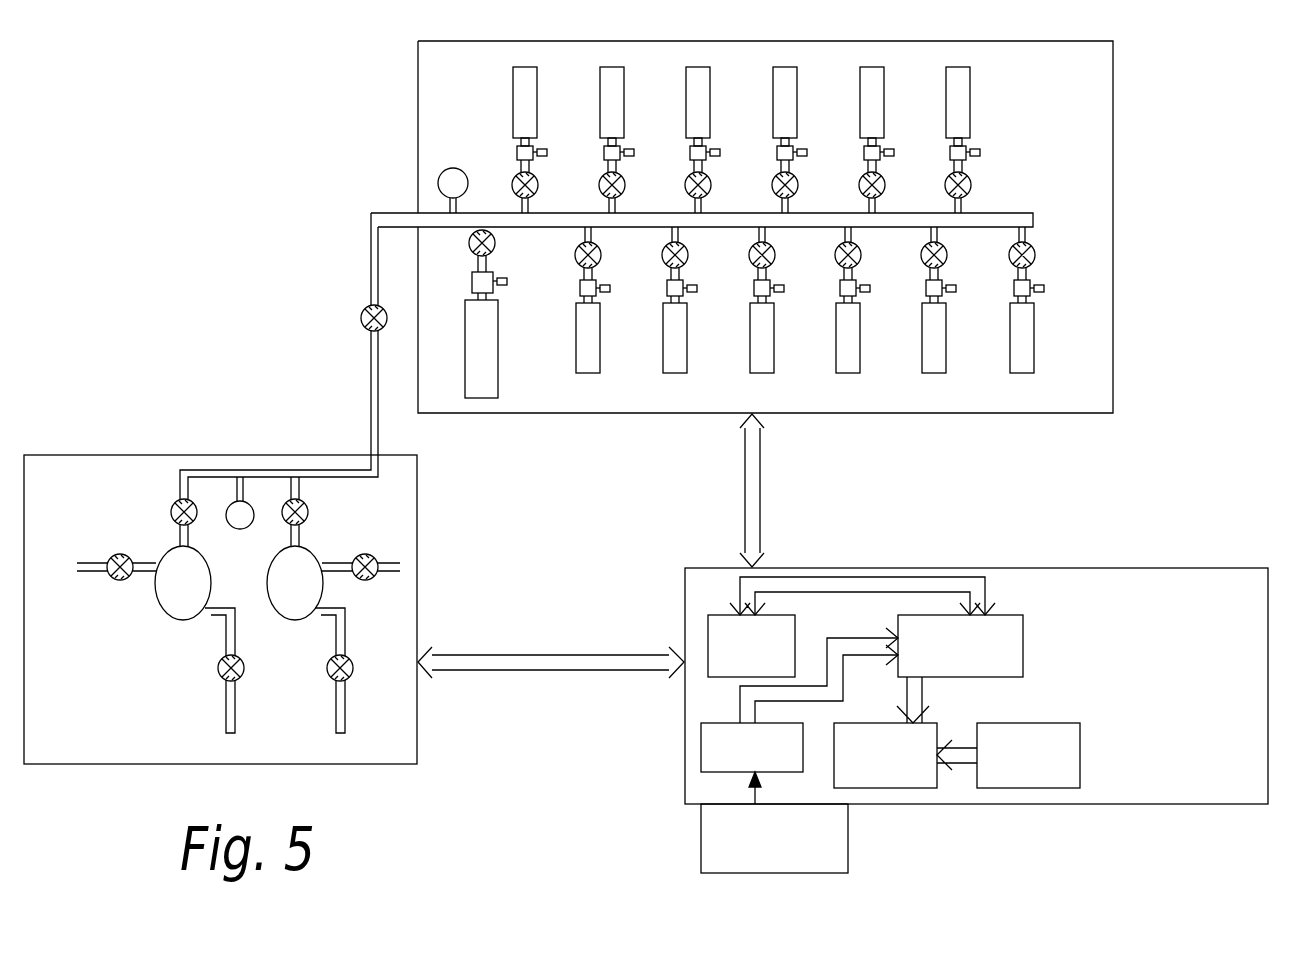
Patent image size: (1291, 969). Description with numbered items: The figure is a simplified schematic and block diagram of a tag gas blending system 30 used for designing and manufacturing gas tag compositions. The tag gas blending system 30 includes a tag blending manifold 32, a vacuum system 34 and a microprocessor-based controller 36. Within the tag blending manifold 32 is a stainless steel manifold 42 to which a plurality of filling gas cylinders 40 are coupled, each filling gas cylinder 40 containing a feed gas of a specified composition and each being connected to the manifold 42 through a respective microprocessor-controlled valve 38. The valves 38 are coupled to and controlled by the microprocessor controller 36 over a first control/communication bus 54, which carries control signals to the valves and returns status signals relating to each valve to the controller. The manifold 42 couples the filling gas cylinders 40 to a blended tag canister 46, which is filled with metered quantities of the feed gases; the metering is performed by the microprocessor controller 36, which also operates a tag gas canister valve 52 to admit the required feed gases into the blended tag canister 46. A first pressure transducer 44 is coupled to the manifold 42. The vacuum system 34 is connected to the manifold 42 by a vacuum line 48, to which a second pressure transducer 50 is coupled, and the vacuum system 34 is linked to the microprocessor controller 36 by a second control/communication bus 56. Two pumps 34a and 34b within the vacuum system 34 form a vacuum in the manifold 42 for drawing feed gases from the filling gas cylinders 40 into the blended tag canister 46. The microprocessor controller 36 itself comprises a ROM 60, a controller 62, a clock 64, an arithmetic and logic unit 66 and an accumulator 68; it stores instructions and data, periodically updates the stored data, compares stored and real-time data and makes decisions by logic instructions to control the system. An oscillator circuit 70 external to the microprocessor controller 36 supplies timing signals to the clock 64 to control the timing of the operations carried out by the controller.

The tag gas blending system 30 is at (248, 206).
The tag blending manifold 32 is at (1069, 88).
The vacuum system 34 is at (74, 528).
The pump 34a is at (177, 563).
The pump 34b is at (300, 563).
The microprocessor controller 36 is at (1207, 763).
The microprocessor-controlled valve 38 is at (970, 185).
The filling gas cylinder 40 is at (1028, 350).
The stainless steel manifold 42 is at (752, 212).
The first pressure transducer 44 is at (437, 183).
The blended tag canister 46 is at (483, 375).
The vacuum line 48 is at (371, 388).
The second pressure transducer 50 is at (236, 502).
The tag gas canister valve 52 is at (469, 243).
The first control/communication bus 54 is at (757, 488).
The second control/communication bus 56 is at (535, 663).
The ROM 60 is at (738, 666).
The controller 62 is at (946, 666).
The clock 64 is at (738, 773).
The arithmetic and logic unit 66 is at (871, 778).
The accumulator 68 is at (1014, 778).
The oscillator circuit 70 is at (820, 841).